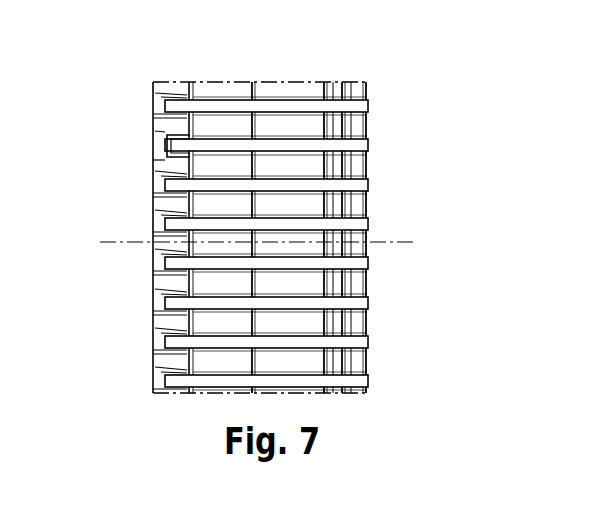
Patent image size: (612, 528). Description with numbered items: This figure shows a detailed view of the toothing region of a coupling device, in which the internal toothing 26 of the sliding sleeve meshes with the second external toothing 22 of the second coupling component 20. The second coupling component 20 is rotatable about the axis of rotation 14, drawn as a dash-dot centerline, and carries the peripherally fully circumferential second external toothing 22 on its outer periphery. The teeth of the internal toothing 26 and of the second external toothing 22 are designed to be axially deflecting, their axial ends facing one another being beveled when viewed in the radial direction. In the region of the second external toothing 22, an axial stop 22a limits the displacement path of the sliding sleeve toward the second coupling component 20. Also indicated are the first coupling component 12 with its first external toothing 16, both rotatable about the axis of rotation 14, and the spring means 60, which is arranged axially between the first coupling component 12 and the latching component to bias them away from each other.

The second coupling component 20 is at (164, 81).
The second external toothing 22 is at (159, 357).
The axial stop 22a is at (165, 141).
The internal toothing 26 is at (304, 105).
The spring means 60 is at (368, 126).
The axis of rotation 14 is at (402, 242).
The first coupling component 12 is at (310, 283).
The first external toothing 16 is at (279, 243).